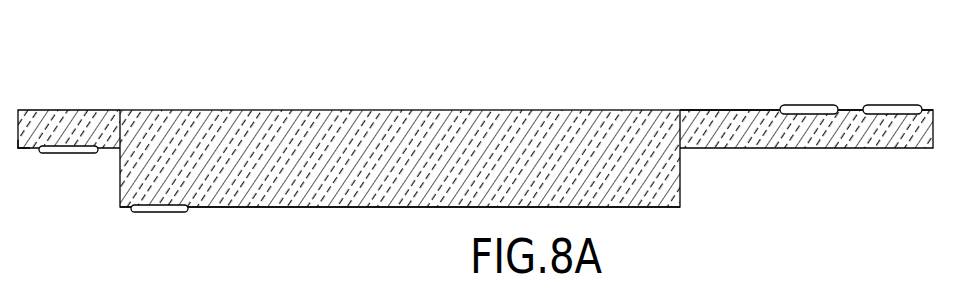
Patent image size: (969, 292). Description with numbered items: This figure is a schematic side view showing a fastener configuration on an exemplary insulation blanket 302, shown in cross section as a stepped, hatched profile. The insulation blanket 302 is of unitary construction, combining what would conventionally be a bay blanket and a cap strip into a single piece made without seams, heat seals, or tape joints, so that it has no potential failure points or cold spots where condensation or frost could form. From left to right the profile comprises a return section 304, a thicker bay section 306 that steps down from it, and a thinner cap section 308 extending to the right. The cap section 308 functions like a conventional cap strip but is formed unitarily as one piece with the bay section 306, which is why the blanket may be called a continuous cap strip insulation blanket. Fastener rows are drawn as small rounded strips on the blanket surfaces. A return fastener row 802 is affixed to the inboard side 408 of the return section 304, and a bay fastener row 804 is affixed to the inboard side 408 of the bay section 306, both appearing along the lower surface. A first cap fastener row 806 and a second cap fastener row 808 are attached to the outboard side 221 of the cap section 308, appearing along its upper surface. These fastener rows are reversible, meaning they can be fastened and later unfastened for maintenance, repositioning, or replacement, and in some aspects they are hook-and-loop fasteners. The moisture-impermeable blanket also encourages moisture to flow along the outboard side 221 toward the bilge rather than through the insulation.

The insulation blanket 302 is at (475, 152).
The return section 304 is at (70, 130).
The bay section 306 is at (355, 118).
The cap section 308 is at (703, 120).
The outboard side 221 is at (748, 104).
The inboard side 408 is at (24, 159).
The return fastener row 802 is at (57, 154).
The bay fastener row 804 is at (153, 212).
The first cap fastener row 806 is at (818, 107).
The second cap fastener row 808 is at (888, 107).